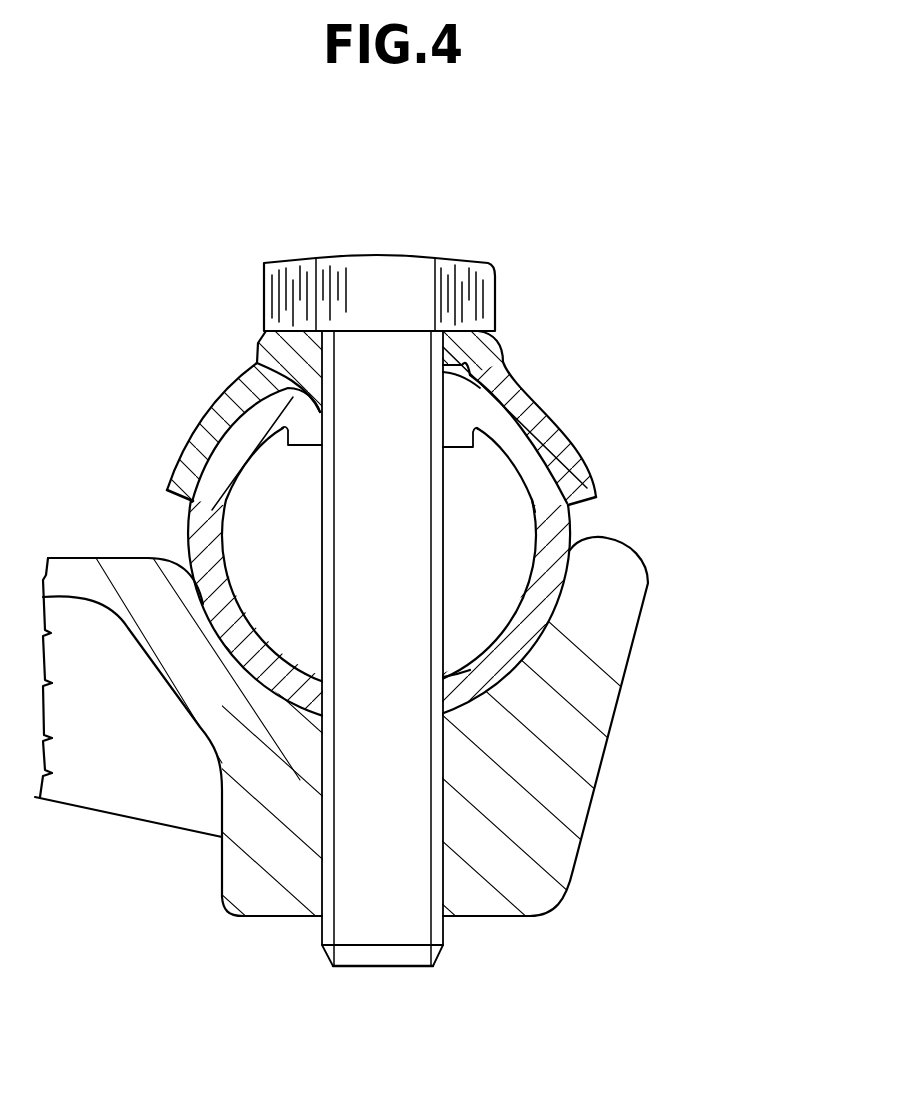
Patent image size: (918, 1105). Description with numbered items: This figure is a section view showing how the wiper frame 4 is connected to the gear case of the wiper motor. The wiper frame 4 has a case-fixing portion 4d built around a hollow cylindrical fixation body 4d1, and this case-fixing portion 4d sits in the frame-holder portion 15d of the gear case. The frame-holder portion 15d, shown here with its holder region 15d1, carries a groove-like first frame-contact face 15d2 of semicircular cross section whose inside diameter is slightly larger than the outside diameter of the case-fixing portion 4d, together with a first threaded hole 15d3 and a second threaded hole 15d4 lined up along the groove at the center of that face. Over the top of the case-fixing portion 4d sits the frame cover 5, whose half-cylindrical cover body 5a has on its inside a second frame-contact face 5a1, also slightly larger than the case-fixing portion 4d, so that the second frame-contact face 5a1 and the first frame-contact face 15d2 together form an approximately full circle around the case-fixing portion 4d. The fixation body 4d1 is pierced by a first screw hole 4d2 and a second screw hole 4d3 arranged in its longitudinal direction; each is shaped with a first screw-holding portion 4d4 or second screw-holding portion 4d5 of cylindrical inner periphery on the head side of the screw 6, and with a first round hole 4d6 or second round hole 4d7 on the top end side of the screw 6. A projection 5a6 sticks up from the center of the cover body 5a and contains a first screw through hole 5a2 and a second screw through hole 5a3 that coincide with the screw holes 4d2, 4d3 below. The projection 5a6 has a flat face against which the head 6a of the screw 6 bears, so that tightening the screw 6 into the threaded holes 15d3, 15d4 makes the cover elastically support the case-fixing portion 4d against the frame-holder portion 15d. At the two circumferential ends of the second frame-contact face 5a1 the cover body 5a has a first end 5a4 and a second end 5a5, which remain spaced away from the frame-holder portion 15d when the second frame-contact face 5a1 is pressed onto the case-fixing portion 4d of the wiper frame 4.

The wiper frame 4 is at (500, 476).
The case-fixing portion 4d is at (500, 476).
The fixation body 4d1 is at (560, 480).
The first screw hole 4d2 is at (330, 313).
The second screw hole 4d3 is at (321, 428).
The first screw-holding portion 4d4 is at (542, 341).
The second screw-holding portion 4d5 is at (467, 408).
The first round hole 4d6 is at (611, 720).
The second round hole 4d7 is at (452, 688).
The frame cover 5 is at (367, 435).
The cover body 5a is at (367, 435).
The second frame-contact face 5a1 is at (225, 514).
The first screw through hole 5a2 is at (252, 279).
The second screw through hole 5a3 is at (308, 340).
The first end 5a4 is at (547, 490).
The second end 5a5 is at (173, 485).
The projection 5a6 is at (478, 342).
The screw 6 is at (379, 557).
The head 6a is at (398, 287).
The frame-holder portion 15d is at (459, 616).
The bracket arm flange 15d1 is at (260, 835).
The first frame-contact face 15d2 is at (557, 627).
The first threaded hole 15d3 is at (522, 845).
The second threaded hole 15d4 is at (430, 774).